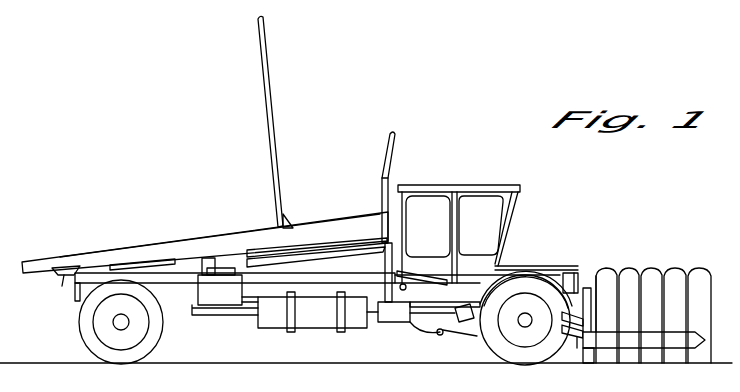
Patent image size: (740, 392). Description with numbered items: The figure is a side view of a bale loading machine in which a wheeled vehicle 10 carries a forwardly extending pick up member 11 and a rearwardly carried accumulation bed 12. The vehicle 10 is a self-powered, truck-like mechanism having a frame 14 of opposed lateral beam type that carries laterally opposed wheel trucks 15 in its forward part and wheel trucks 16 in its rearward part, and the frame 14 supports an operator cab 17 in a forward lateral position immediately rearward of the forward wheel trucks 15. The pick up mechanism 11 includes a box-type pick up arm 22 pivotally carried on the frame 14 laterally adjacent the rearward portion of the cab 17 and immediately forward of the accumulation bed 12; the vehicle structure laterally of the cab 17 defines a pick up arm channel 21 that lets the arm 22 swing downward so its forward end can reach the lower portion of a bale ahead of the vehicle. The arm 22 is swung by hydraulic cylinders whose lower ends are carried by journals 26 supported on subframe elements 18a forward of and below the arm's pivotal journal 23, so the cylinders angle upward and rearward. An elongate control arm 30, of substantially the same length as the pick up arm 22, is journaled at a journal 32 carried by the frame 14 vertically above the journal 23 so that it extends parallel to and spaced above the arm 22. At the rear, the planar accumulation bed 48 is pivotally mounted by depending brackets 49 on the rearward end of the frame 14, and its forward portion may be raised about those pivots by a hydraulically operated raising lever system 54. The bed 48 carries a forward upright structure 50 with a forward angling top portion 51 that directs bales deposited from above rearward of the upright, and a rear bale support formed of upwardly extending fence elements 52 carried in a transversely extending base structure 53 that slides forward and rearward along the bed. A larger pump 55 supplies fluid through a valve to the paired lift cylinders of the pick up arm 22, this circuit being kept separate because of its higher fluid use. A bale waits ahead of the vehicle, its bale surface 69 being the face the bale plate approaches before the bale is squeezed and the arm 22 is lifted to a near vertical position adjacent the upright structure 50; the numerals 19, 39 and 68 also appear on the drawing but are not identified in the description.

The wheeled vehicle 10 is at (248, 316).
The pick up member 11 is at (577, 353).
The accumulation bed 12 is at (381, 211).
The frame 14 is at (178, 292).
The wheel trucks 15 is at (497, 341).
The wheel trucks 16 is at (86, 326).
The operator cab 17 is at (508, 213).
The subframe elements 18a is at (440, 331).
The lift mast 19 is at (587, 288).
The pick up arm channel 21 is at (478, 291).
The pick up arm 22 is at (573, 339).
The pivotal journal 23 is at (407, 287).
The journals 26 is at (436, 333).
The control arm 30 is at (417, 280).
The journal 32 is at (399, 272).
The fork platform 39 is at (652, 338).
The accumulation bed 48 is at (147, 248).
The depending brackets 49 is at (62, 289).
The forward upright structure 50 is at (388, 175).
The forward angling top portion 51 is at (390, 137).
The fence elements 52 is at (266, 105).
The base structure 53 is at (281, 222).
The raising lever system 54 is at (300, 258).
The larger pump 55 is at (208, 303).
The bale 68 is at (698, 288).
The bale surface 69 is at (600, 276).